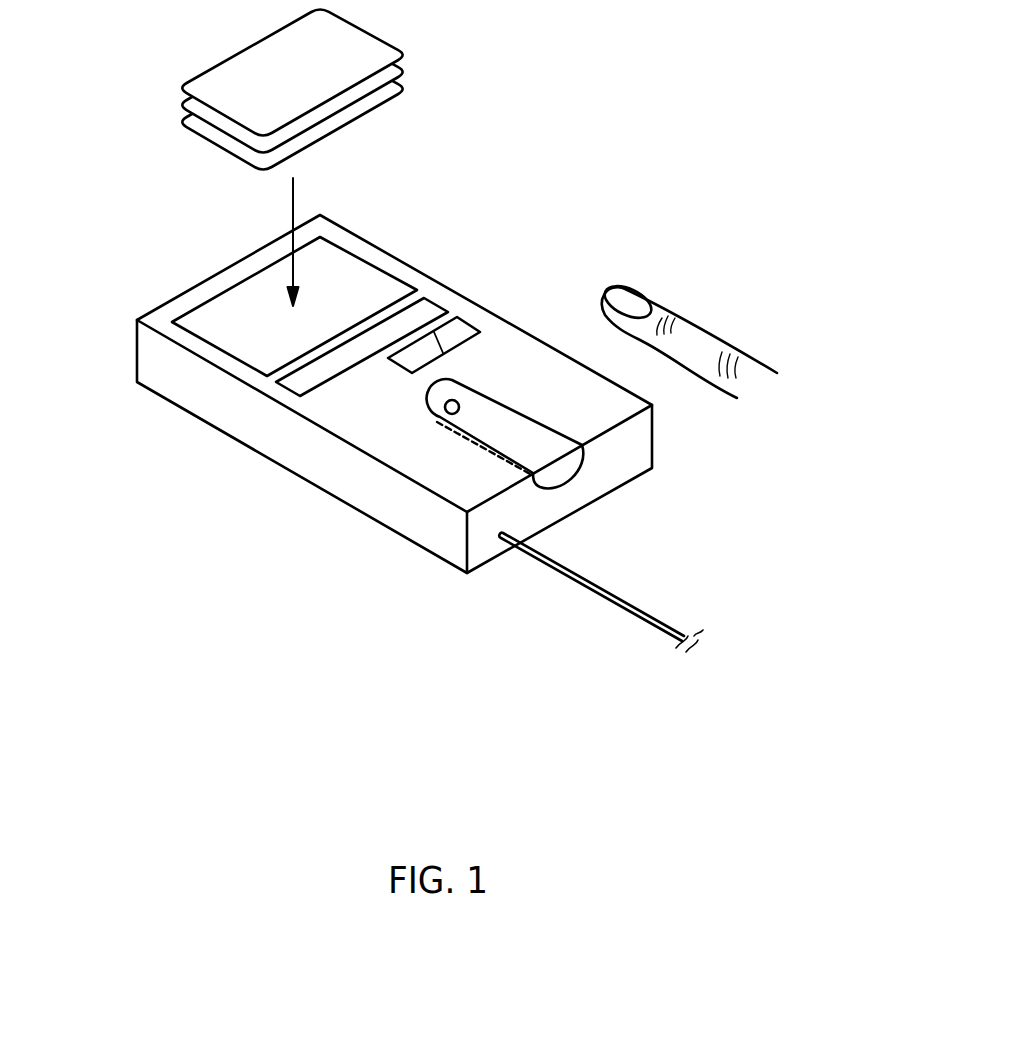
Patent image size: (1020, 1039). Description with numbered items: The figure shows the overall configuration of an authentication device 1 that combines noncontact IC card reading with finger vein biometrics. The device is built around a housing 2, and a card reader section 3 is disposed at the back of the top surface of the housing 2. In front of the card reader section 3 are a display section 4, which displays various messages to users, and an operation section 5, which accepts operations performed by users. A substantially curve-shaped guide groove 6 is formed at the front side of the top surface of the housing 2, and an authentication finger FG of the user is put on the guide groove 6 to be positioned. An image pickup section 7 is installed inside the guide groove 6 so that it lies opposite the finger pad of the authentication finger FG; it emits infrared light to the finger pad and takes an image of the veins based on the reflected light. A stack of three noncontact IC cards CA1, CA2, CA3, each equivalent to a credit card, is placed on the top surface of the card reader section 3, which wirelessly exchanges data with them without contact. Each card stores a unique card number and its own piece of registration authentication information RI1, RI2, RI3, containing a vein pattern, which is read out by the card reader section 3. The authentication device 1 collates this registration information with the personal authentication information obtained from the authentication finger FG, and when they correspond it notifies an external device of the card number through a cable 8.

The authentication device 1 is at (196, 653).
The housing 2 is at (637, 462).
The card reader section 3 is at (342, 255).
The display section 4 is at (423, 302).
The operation section 5 is at (458, 315).
The guide groove 6 is at (555, 472).
The image pickup section 7 is at (438, 422).
The cable 8 is at (637, 600).
The noncontact IC card CA1 is at (410, 56).
The noncontact IC card CA2 is at (410, 72).
The noncontact IC card CA3 is at (410, 89).
The registration authentication information RI1 is at (166, 230).
The registration authentication information RI2 is at (166, 230).
The registration authentication information RI3 is at (292, 225).
The authentication finger FG is at (710, 337).